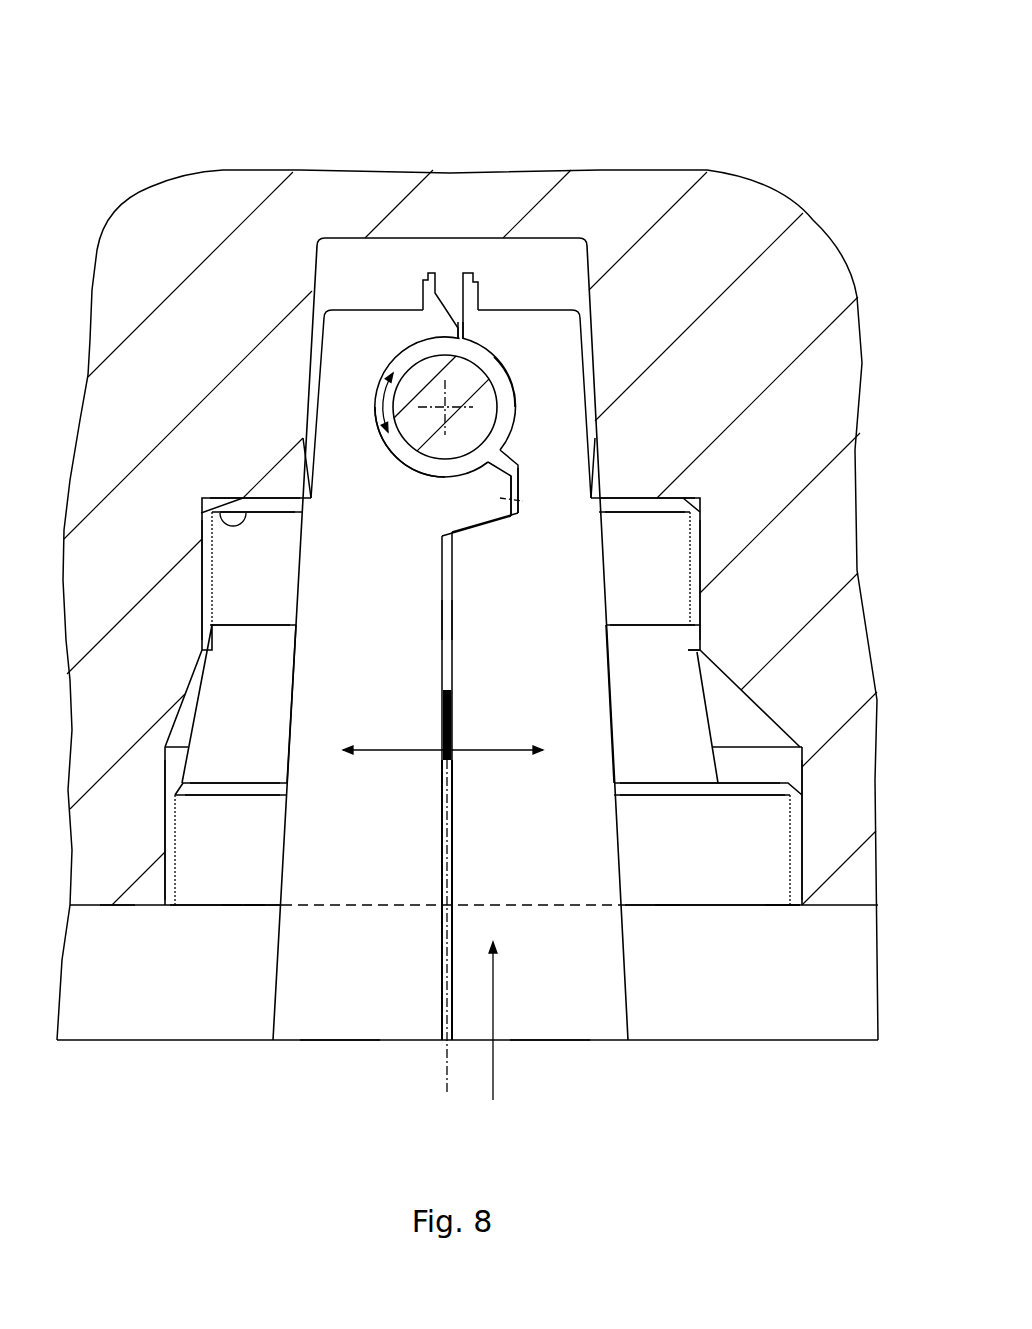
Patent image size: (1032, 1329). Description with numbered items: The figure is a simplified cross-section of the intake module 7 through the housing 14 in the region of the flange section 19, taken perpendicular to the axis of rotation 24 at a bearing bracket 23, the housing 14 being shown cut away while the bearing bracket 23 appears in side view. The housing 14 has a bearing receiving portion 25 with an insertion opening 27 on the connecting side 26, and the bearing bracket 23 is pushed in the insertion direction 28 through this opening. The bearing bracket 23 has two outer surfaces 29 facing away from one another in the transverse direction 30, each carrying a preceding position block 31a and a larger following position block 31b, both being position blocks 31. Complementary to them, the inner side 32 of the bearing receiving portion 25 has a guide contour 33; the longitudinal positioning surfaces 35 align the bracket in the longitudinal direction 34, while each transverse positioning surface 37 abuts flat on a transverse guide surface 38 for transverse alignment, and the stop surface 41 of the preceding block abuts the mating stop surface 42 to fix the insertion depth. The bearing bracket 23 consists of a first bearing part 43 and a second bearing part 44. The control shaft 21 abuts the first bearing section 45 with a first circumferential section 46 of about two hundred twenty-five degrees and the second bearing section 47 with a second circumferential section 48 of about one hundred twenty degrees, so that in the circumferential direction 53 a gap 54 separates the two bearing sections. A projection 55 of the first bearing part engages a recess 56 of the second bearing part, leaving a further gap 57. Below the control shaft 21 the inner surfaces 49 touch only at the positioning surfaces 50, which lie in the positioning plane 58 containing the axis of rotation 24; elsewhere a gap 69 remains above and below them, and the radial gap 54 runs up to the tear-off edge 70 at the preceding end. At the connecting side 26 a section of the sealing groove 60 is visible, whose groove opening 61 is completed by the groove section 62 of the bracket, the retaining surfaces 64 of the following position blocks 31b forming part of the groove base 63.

The intake module 7 is at (780, 127).
The housing 14 is at (672, 143).
The flange section 19 is at (813, 243).
The control shaft 21 is at (427, 453).
The bearing bracket 23 is at (598, 378).
The axis of rotation 24 is at (423, 396).
The bearing receiving portion 25 is at (742, 705).
The connecting side 26 is at (147, 1042).
The insertion opening 27 is at (780, 906).
The insertion direction 28 is at (494, 1000).
The outer surfaces 29 is at (293, 702).
The transverse direction 30 is at (485, 752).
The position block 31 is at (483, 701).
The preceding position block 31a is at (225, 590).
The following position block 31b is at (203, 871).
The inner side 32 is at (768, 728).
The guide contour 33 is at (203, 630).
The longitudinal direction 34 is at (495, 457).
The longitudinal positioning surfaces 35 is at (236, 608).
The transverse positioning surface 37 is at (205, 512).
The transverse guide surface 38 is at (213, 540).
The stop surface 41 is at (260, 498).
The mating stop surface 42 is at (218, 503).
The first bearing part 43 is at (343, 1046).
The second bearing part 44 is at (548, 1046).
The first bearing section 45 is at (328, 338).
The first circumferential section 46 is at (410, 450).
The second bearing section 47 is at (582, 332).
The second circumferential section 48 is at (500, 404).
The inner surfaces 49 is at (442, 724).
The positioning surfaces 50 is at (442, 624).
The circumferential direction 53 is at (384, 402).
The gap 54 is at (464, 338).
The projection 55 is at (523, 502).
The recess 56 is at (512, 482).
The gap 57 is at (516, 514).
The positioning plane 58 is at (446, 1098).
The sealing groove 60 is at (82, 912).
The groove opening 61 is at (232, 906).
The groove section 62 is at (342, 906).
The groove base 63 is at (115, 906).
The retaining surface 64 is at (252, 906).
The gap 69 is at (443, 536).
The tear-off edge 70 is at (432, 272).